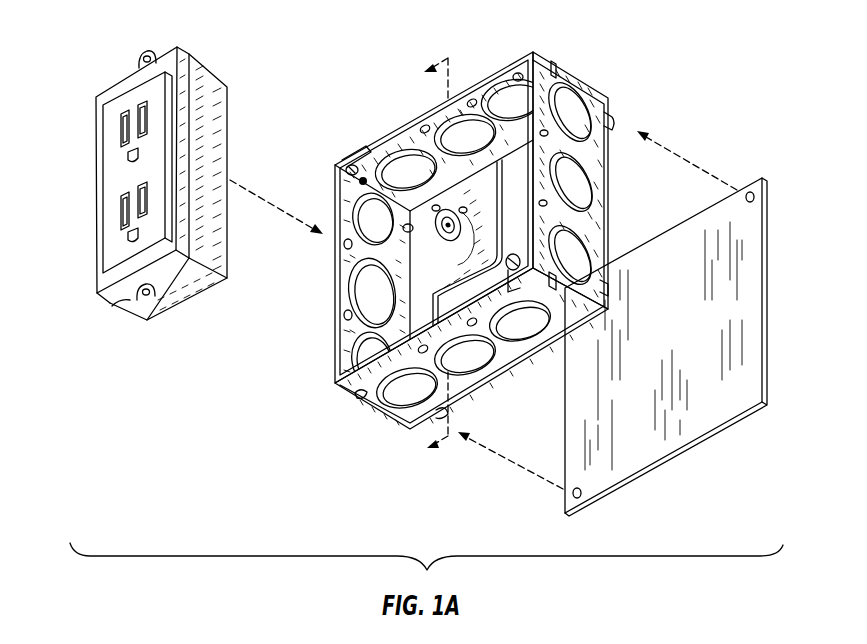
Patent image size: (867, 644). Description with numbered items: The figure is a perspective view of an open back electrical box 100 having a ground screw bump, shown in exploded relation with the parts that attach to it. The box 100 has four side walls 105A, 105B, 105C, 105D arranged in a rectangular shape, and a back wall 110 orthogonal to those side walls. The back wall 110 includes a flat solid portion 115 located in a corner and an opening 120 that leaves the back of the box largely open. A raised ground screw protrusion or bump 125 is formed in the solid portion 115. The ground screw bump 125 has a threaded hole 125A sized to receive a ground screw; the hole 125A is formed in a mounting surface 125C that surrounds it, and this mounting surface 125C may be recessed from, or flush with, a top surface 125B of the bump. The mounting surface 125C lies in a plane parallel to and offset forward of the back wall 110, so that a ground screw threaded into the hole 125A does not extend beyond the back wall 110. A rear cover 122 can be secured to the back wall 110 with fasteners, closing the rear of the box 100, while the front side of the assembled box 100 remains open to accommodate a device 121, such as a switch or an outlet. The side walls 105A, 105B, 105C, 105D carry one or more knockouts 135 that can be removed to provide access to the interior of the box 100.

The open back electrical box 100 is at (349, 56).
The side wall 105A is at (503, 76).
The side wall 105B is at (603, 98).
The side wall 105C is at (411, 412).
The side wall 105D is at (350, 333).
The back wall 110 is at (353, 300).
The flat solid portion 115 is at (433, 205).
The opening 120 is at (518, 202).
The device 121 is at (120, 177).
The rear cover 122 is at (768, 247).
The ground screw bump 125 is at (457, 250).
The threaded hole 125A is at (340, 193).
The top surface 125B is at (467, 211).
The mounting surface 125C is at (436, 226).
The knockouts 135 is at (519, 318).